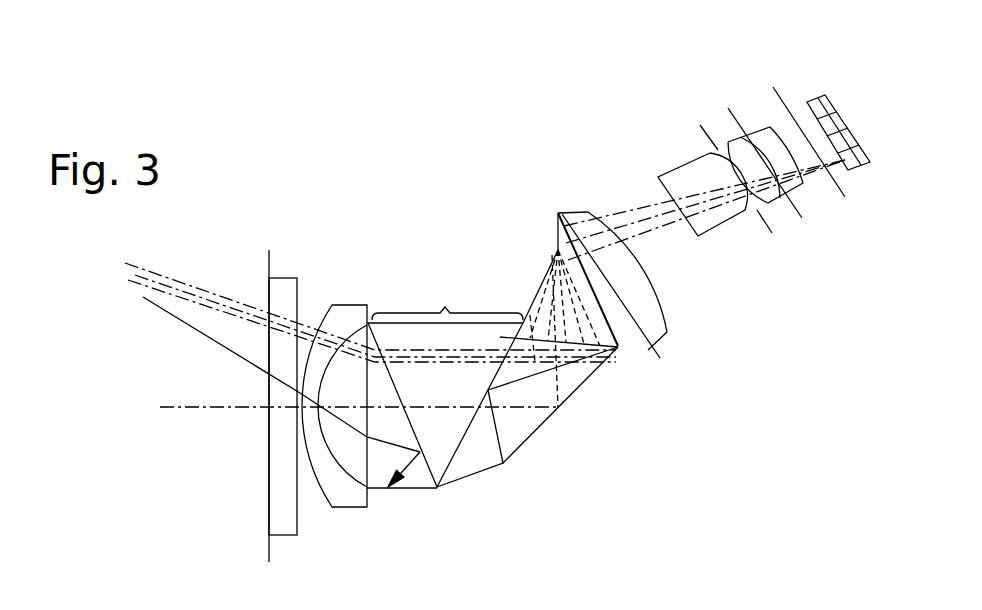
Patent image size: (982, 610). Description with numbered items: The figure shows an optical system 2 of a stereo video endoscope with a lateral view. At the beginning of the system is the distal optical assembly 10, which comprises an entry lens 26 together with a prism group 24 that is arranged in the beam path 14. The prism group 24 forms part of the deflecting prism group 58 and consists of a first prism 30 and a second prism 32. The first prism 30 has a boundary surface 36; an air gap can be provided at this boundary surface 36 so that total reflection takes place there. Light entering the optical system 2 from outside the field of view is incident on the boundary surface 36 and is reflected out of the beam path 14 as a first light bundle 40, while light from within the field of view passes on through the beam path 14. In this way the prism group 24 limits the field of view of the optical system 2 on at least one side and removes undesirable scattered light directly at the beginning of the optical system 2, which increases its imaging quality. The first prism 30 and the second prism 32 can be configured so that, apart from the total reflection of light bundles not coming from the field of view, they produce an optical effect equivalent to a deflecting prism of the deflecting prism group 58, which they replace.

The optical system 2 is at (643, 110).
The distal optical assembly 10 is at (568, 473).
The beam path 14 is at (485, 337).
The prism group 24 is at (447, 297).
The entry lens 26 is at (343, 303).
The first prism 30 is at (437, 490).
The second prism 32 is at (450, 440).
The boundary surface 36 is at (437, 487).
The first light bundle 40 is at (395, 492).
The deflecting prism group 58 is at (428, 235).